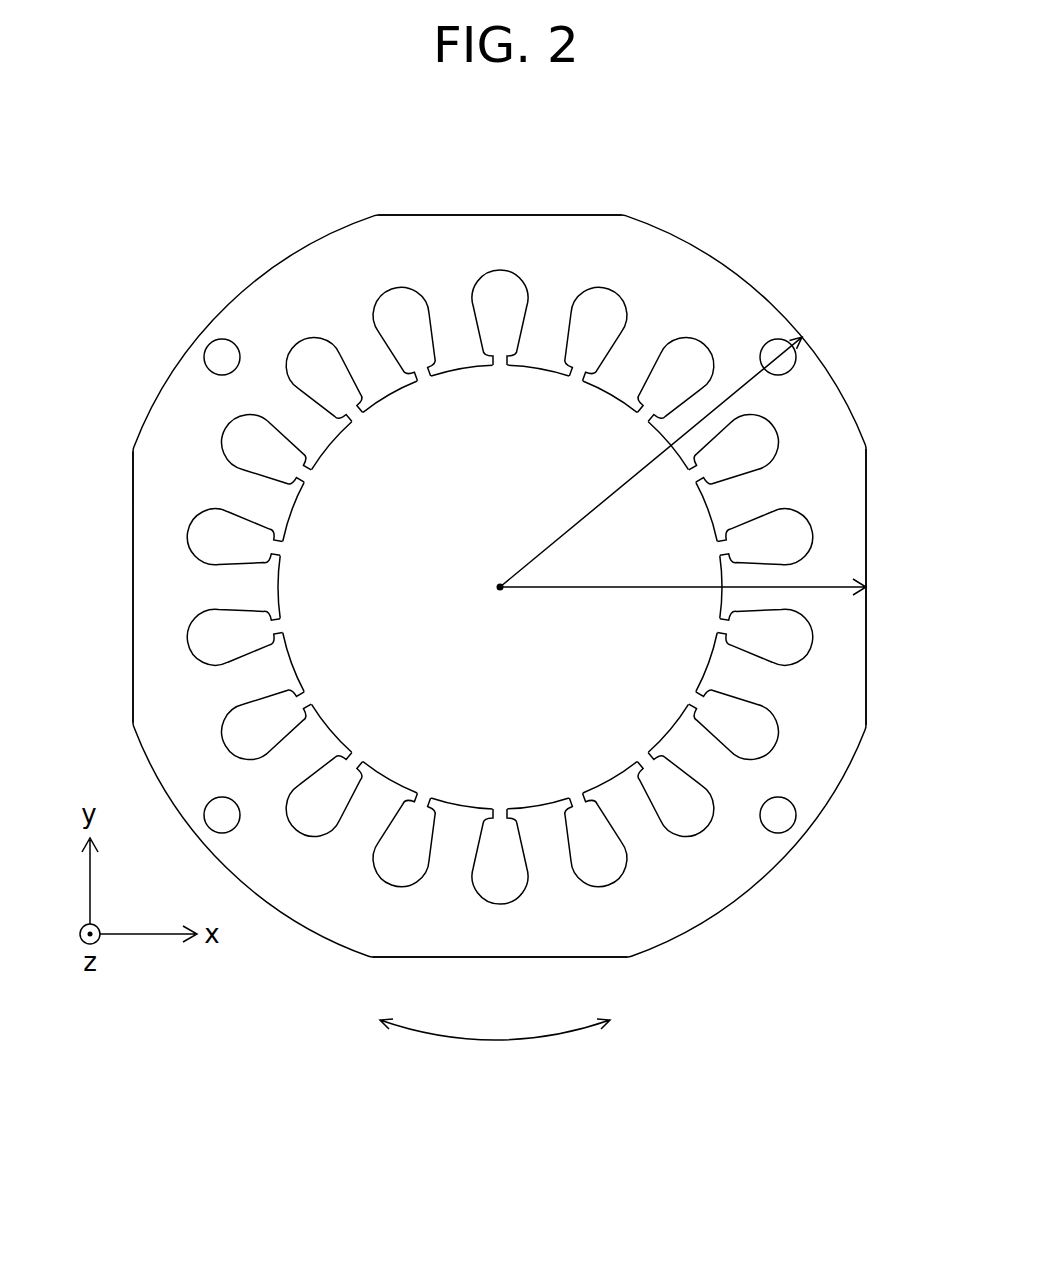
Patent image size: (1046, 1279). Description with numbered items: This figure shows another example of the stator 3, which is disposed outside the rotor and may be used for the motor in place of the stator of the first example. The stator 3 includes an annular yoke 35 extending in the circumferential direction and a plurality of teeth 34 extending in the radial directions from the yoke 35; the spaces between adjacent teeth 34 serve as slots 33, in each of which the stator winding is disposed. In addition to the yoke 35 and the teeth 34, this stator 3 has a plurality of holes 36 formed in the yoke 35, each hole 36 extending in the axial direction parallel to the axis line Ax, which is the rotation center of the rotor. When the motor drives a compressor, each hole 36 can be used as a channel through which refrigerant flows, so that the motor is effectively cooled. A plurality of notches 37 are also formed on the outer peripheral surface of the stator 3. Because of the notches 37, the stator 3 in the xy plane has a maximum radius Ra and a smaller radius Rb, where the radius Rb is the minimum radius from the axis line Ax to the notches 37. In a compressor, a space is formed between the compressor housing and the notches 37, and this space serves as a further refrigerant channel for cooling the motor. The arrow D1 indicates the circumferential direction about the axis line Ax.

The stator 3 is at (498, 587).
The slots 33 is at (328, 385).
The teeth 34 is at (369, 353).
The yoke 35 is at (369, 265).
The hole 36 is at (210, 345).
The notch 37 is at (498, 215).
The axis line Ax is at (499, 592).
The maximum radius Ra is at (651, 462).
The radius Rb is at (683, 600).
The circumferential direction D1 is at (495, 1042).